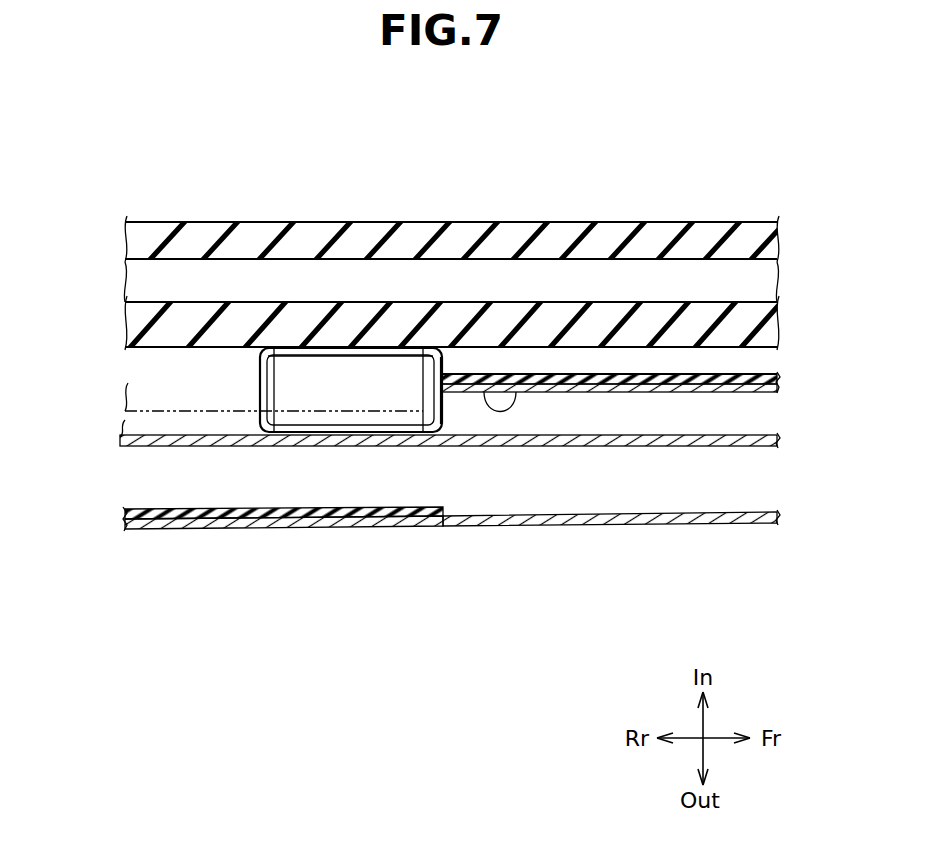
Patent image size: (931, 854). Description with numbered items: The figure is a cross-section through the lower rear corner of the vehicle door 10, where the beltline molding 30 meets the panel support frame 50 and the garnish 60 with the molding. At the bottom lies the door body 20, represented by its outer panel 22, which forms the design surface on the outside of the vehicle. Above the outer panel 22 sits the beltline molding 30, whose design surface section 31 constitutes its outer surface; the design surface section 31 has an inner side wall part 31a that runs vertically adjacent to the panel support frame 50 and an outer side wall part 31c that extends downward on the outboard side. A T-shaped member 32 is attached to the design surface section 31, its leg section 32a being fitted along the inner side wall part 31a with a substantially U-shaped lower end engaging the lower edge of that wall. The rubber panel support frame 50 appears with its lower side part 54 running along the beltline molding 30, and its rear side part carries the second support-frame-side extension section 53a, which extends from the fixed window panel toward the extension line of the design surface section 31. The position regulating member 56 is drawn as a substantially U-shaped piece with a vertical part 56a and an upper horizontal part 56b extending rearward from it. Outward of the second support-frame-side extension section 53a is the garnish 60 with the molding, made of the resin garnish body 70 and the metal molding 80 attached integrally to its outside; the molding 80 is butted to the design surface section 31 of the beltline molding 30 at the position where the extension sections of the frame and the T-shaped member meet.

The vehicle door 10 is at (69, 93).
The door body 20 is at (135, 449).
The outer panel 22 is at (622, 446).
The beltline molding 30 is at (486, 526).
The design surface section 31 is at (557, 525).
The inner side wall part 31a is at (482, 374).
The outer side wall part 31c is at (742, 526).
The T-shaped member 32 is at (628, 387).
The leg section 32a is at (578, 374).
The panel support frame 50 is at (320, 222).
The second support-frame-side extension section 53a is at (185, 412).
The lower side part 54 is at (733, 222).
The position regulating member 56 is at (258, 382).
The vertical part 56a is at (442, 407).
The horizontal part 56b is at (332, 375).
The garnish with molding 60 is at (300, 636).
The garnish body 70 is at (253, 489).
The molding 80 is at (258, 527).